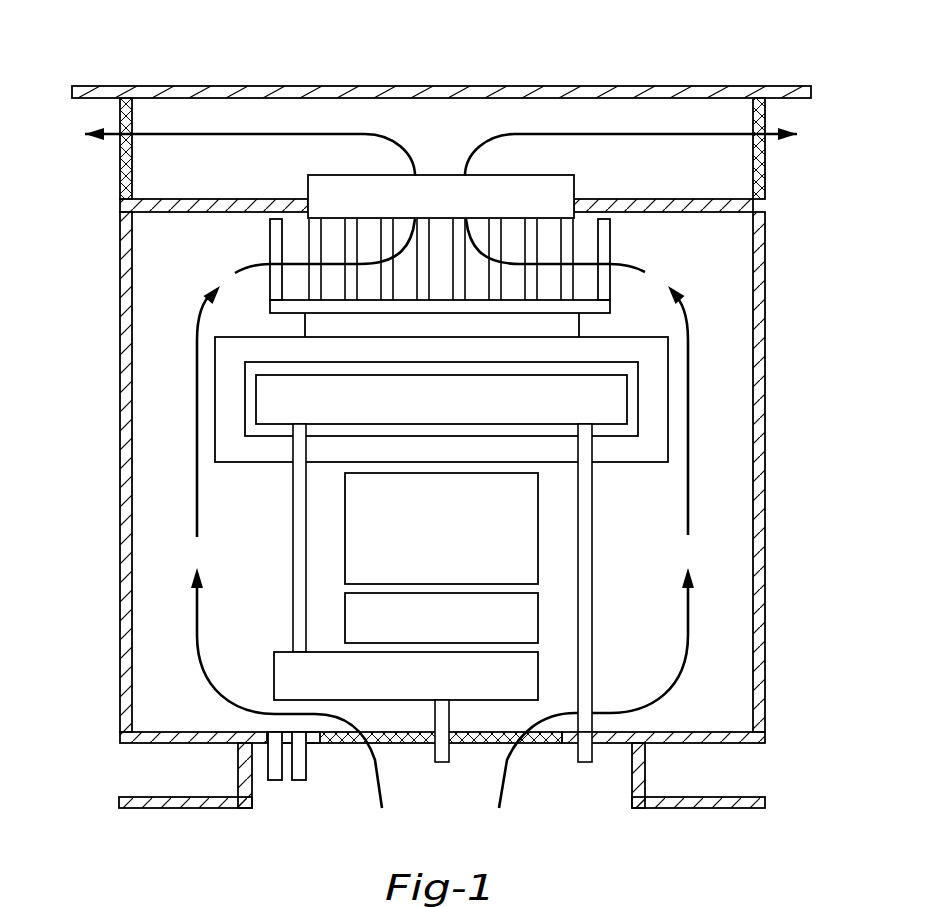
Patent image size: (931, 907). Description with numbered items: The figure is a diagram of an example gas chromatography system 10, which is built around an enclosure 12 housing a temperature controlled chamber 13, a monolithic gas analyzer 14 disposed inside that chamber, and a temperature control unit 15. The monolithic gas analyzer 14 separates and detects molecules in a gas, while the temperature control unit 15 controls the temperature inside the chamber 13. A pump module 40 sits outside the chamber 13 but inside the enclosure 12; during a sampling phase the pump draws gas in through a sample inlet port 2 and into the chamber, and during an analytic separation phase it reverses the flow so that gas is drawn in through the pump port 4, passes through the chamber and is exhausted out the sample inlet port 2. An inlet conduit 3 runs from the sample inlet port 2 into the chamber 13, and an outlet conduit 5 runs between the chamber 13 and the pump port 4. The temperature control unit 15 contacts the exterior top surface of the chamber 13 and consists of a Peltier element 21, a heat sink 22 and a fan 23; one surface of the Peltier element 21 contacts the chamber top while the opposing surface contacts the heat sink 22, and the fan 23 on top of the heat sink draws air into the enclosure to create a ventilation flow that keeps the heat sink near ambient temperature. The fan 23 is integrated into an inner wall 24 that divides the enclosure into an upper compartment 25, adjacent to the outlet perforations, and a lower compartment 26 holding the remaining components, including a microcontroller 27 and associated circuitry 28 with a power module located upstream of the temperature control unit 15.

The gas chromatography system 10 is at (688, 66).
The enclosure 12 is at (105, 384).
The temperature controlled chamber 13 is at (650, 448).
The monolithic gas analyzer 14 is at (627, 400).
The temperature control unit 15 is at (186, 251).
The Peltier element 21 is at (560, 327).
The heat sink 22 is at (630, 236).
The fan 23 is at (443, 160).
The inner wall 24 is at (228, 198).
The upper compartment 25 is at (677, 182).
The lower compartment 26 is at (182, 711).
The microcontroller 27 is at (538, 618).
The associated circuitry 28 is at (345, 497).
The pump module 40 is at (274, 678).
The sample inlet port 2 is at (585, 775).
The inlet conduit 3 is at (592, 558).
The pump port 4 is at (440, 775).
The outlet conduit 5 is at (293, 558).